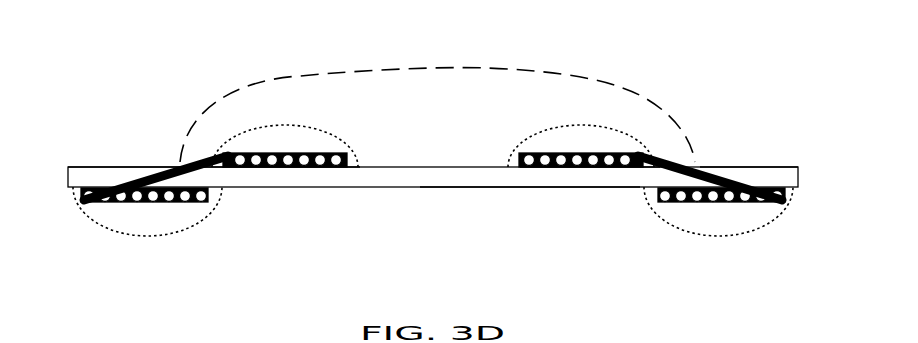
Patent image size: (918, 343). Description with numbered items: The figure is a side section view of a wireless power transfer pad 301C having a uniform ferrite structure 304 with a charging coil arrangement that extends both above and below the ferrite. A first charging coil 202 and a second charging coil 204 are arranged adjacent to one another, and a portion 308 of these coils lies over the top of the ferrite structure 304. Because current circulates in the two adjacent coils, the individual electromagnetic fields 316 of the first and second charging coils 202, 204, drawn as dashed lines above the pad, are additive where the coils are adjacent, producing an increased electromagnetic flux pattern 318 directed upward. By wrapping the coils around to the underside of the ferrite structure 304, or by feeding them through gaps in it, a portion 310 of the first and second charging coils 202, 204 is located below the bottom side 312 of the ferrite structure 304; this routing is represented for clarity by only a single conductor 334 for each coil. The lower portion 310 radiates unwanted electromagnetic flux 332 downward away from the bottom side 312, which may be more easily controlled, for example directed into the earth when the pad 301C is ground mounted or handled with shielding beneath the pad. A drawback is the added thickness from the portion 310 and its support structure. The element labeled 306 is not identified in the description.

The wireless power transfer pad 301C is at (114, 137).
The first charging coil 202 is at (250, 170).
The second charging coil 204 is at (618, 168).
The uniform ferrite structure 304 is at (577, 188).
The top surface of substrate 306 is at (748, 155).
The portion of the charging coils over the main section 308 is at (534, 171).
The portion of the charging coils below the ferrite structure 310 is at (166, 214).
The bottom side of the ferrite structure 312 is at (304, 198).
The electromagnetic fields of the charging coils 316 is at (340, 137).
The electromagnetic flux pattern 318 is at (519, 69).
The unwanted electromagnetic flux 332 is at (133, 237).
The single conductor 334 is at (167, 171).